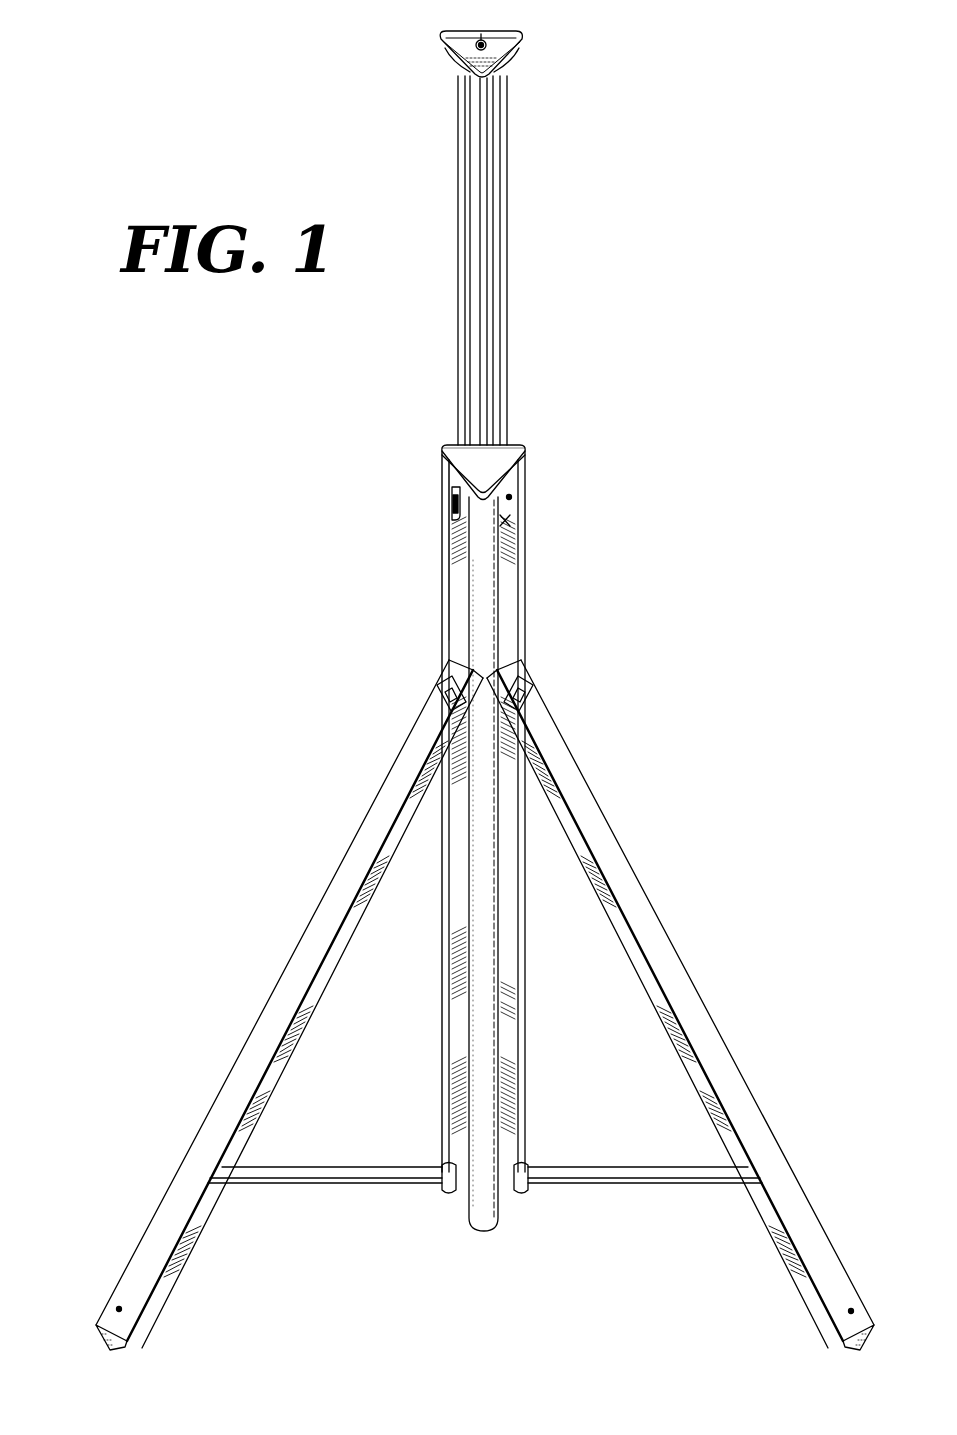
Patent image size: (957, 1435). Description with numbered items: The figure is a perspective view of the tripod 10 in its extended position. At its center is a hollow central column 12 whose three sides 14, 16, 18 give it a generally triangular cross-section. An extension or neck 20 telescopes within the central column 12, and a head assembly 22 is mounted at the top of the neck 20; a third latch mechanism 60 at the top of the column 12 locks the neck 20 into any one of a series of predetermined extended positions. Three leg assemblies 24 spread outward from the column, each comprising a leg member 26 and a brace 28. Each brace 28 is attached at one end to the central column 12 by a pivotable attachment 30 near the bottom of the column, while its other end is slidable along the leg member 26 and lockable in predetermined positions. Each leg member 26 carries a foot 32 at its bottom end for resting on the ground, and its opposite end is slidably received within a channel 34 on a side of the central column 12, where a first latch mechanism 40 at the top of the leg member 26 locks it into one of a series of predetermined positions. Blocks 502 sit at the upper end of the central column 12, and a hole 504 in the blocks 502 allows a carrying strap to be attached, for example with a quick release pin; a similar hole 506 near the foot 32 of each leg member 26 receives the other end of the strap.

The tripod 10 is at (630, 702).
The central column 12 is at (522, 514).
The side 14 is at (527, 462).
The side 16 is at (449, 488).
The side 18 is at (452, 446).
The neck 20 is at (508, 222).
The head assembly 22 is at (517, 36).
The leg assembly 24 is at (485, 1004).
The leg member 26 is at (292, 977).
The brace 28 is at (280, 1168).
The pivotable attachment 30 is at (446, 1168).
The foot 32 is at (97, 1326).
The channel 34 is at (505, 587).
The first latch mechanism 40 is at (429, 688).
The third latch mechanism 60 is at (447, 507).
The block 502 is at (508, 520).
The hole 504 is at (513, 497).
The hole 506 is at (118, 1308).